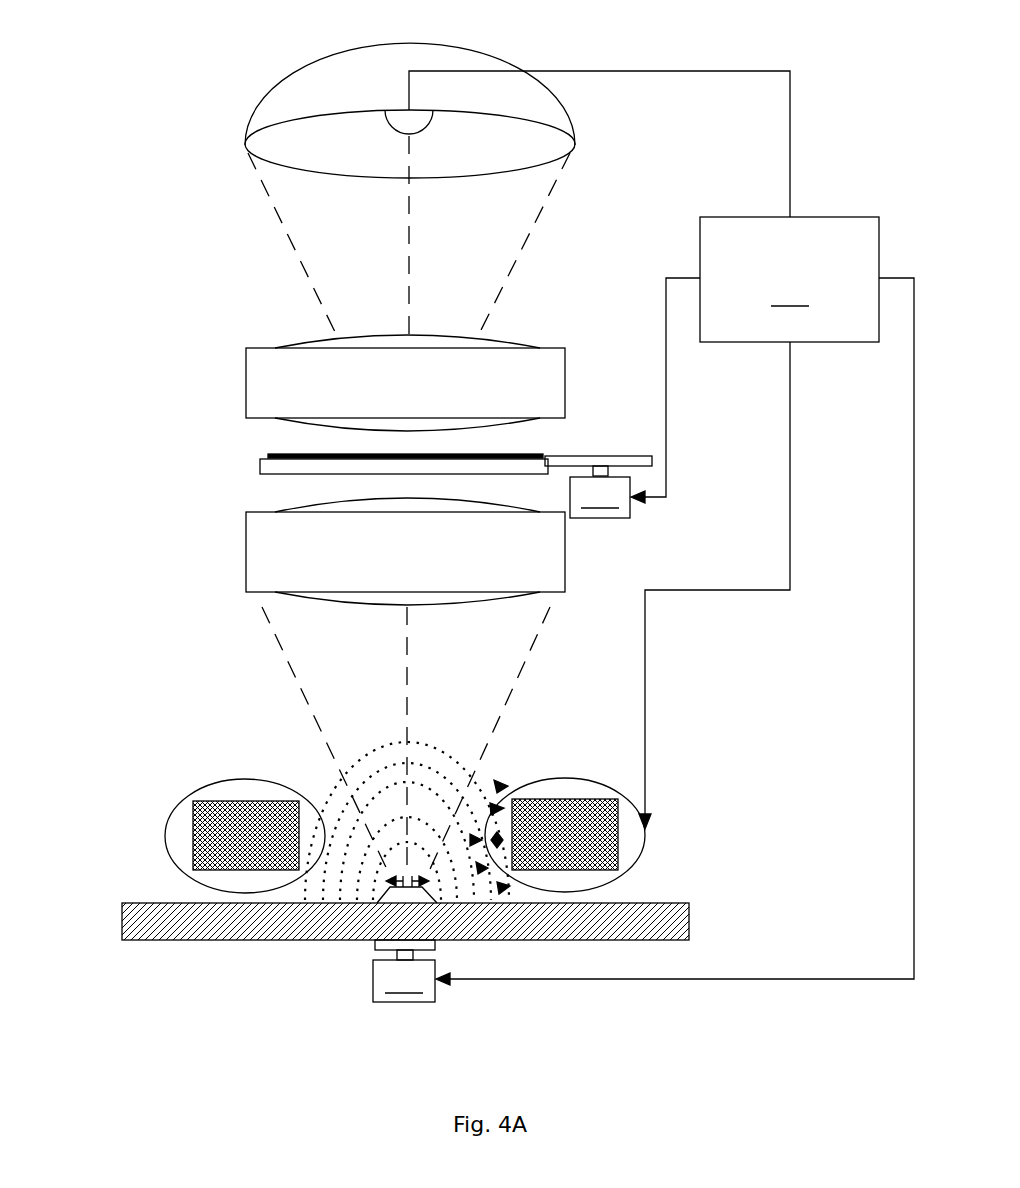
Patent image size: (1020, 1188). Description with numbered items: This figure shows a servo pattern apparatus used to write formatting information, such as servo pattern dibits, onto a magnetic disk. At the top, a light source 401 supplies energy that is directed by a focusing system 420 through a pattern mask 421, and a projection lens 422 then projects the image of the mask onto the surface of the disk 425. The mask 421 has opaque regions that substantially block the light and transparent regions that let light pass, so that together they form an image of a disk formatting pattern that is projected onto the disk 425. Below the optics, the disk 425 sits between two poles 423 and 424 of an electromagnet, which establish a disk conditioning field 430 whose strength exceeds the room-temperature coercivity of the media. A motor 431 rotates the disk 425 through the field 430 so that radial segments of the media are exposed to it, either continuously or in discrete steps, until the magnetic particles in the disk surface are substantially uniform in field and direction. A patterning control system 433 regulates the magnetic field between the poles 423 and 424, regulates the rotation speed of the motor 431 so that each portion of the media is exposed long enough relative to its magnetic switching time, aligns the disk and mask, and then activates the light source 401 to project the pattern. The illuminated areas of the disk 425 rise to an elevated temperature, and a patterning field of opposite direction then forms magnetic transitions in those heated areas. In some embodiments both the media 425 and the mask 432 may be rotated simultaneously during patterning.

The light source 401 is at (412, 125).
The focusing system 420 is at (245, 360).
The pattern mask 421 is at (260, 459).
The projection lens 422 is at (246, 530).
The pole 423 is at (190, 796).
The pole 424 is at (577, 780).
The disk 425 is at (120, 918).
The disk conditioning field 430 is at (310, 758).
The motor 431 is at (404, 971).
The mask 432 is at (600, 497).
The patterning control system 433 is at (789, 279).